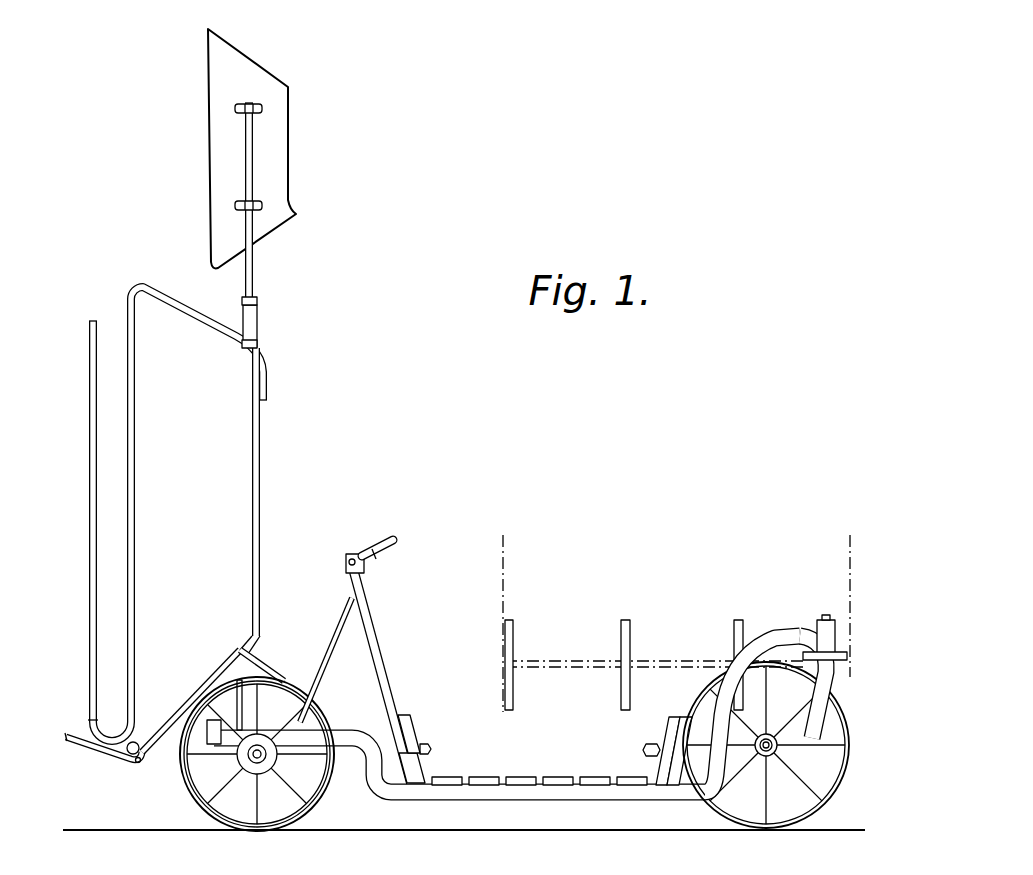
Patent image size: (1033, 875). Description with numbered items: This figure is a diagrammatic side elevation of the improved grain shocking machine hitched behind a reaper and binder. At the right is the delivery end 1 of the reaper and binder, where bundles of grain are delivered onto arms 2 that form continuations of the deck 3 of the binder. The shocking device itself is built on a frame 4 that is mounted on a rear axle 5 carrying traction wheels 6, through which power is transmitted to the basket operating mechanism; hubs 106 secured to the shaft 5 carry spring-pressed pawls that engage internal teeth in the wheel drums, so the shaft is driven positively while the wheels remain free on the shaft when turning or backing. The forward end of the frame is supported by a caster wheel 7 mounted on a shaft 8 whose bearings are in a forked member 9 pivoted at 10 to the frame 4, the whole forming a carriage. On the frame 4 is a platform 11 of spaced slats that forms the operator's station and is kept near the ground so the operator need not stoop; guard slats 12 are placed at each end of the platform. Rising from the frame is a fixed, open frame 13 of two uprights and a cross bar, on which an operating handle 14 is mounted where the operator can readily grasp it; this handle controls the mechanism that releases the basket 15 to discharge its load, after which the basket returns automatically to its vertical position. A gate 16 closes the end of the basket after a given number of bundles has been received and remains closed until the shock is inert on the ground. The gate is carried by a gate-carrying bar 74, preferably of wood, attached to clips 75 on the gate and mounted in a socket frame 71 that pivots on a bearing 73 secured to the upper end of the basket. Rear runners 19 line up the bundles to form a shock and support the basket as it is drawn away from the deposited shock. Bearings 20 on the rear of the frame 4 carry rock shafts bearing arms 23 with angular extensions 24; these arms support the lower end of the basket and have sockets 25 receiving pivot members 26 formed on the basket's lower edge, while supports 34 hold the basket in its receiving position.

The delivery end of a reaper and binder 1 is at (503, 565).
The arms 2 is at (513, 700).
The deck of the binder 3 is at (566, 669).
The frame 4 is at (220, 740).
The rear axle 5 is at (256, 762).
The traction wheels 6 is at (193, 790).
The caster wheel 7 is at (712, 806).
The shaft 8 is at (756, 751).
The forked member 9 is at (831, 683).
The pivot 10 is at (824, 616).
The platform 11 is at (541, 777).
The guard slats 12 is at (425, 746).
The fixed open frame 13 is at (362, 668).
The operating handle 14 is at (377, 537).
The basket 15 is at (199, 504).
The gate 16 is at (277, 160).
The rear runners 19 is at (97, 537).
The bearings 20 is at (232, 707).
The arms 23 is at (167, 717).
The angular extensions 24 is at (87, 743).
The sockets 25 is at (139, 763).
The pivot members 26 is at (129, 753).
The supports 34 is at (254, 662).
The socket frame 71 is at (243, 343).
The bearing 73 is at (258, 300).
The gate-carrying bar 74 is at (245, 162).
The clips 75 is at (249, 103).
The hubs 106 is at (265, 768).